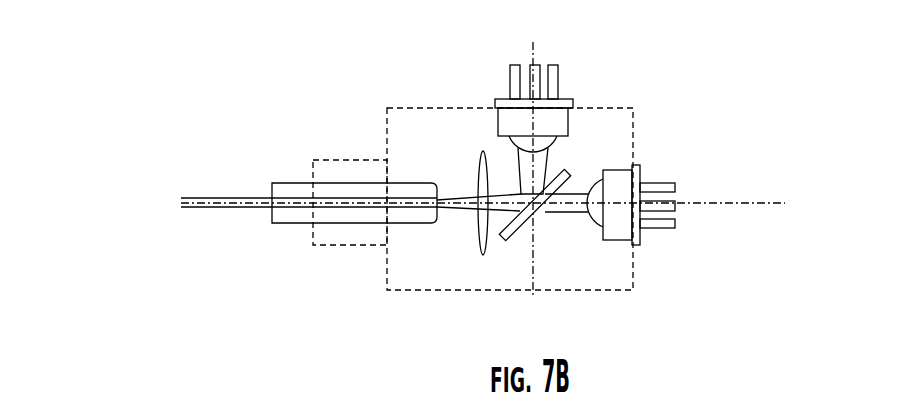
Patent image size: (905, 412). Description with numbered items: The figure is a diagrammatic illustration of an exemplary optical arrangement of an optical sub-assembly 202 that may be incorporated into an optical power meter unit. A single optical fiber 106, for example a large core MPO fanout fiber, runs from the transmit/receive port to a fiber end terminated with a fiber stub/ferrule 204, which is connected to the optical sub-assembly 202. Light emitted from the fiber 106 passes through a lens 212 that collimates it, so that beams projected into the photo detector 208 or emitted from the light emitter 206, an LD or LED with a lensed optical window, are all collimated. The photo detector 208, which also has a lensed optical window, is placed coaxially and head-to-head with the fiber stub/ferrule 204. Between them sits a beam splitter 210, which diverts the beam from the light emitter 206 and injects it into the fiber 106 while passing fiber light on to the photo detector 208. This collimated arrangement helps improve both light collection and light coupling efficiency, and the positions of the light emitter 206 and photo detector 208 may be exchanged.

The optical fiber 106 is at (229, 207).
The optical sub-assembly 202 is at (387, 128).
The fiber stub/ferrule 204 is at (296, 223).
The light emitter 206 is at (568, 120).
The photo detector 208 is at (623, 232).
The beam splitter 210 is at (523, 240).
The lens 212 is at (478, 238).